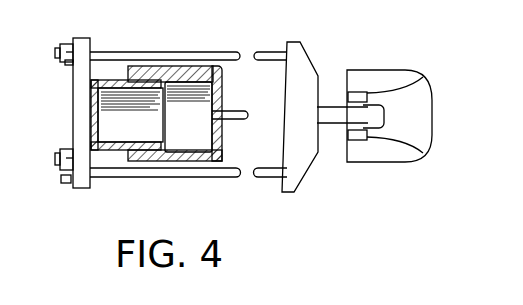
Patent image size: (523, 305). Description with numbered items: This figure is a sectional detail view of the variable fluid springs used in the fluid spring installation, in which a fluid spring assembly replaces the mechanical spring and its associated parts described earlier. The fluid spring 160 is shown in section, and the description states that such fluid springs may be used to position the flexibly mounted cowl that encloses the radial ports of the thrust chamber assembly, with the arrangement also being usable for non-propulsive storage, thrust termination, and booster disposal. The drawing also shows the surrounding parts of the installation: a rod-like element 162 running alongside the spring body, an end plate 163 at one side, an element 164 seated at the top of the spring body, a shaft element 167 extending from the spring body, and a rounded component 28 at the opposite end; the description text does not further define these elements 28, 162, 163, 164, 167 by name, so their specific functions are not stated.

The drive motor 28 is at (402, 77).
The fluid spring 160 is at (222, 155).
The guide rods 162 is at (183, 53).
The mounting plate 163 is at (88, 101).
The bearing 164 is at (150, 76).
The shaft 167 is at (244, 115).